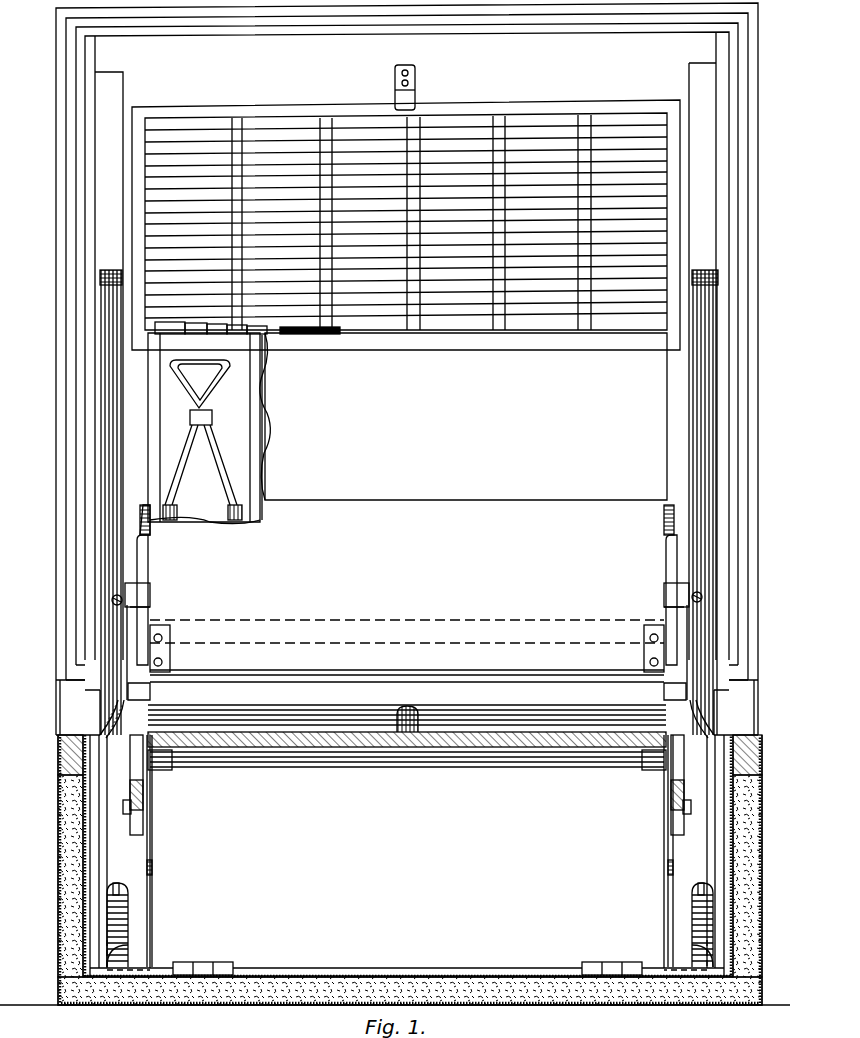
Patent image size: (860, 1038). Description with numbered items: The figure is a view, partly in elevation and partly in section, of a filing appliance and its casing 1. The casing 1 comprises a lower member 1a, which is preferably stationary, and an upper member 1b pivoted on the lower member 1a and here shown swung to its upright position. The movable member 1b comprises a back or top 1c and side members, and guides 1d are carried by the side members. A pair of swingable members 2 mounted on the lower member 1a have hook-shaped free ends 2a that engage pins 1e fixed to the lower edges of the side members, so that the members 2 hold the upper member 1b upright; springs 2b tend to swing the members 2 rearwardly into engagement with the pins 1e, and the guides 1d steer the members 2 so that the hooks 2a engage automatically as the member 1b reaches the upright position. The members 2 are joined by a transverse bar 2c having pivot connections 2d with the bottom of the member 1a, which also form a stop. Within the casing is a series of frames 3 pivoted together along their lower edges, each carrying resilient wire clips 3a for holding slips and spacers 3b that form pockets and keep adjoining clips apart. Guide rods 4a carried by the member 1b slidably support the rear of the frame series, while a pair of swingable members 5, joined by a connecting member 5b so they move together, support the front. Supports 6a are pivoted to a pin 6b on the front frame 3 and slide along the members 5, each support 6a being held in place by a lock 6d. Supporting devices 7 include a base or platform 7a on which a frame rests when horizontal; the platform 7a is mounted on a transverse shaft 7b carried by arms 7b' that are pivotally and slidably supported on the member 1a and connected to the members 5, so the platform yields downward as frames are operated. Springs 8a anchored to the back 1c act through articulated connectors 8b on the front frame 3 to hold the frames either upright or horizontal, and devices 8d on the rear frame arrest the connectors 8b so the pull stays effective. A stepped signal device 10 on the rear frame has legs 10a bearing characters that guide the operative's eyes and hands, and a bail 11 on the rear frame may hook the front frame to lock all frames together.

The casing 1 is at (394, 383).
The lower casing member 1a is at (290, 1015).
The upper casing member 1b is at (388, 346).
The back or top 1c is at (62, 378).
The guides 1d is at (105, 478).
The pin 1e is at (407, 726).
The swingable members 2 is at (106, 882).
The hook-shaped free ends 2a is at (100, 690).
The springs 2b is at (128, 930).
The transverse bar 2c is at (386, 967).
The pivot connection 2d is at (218, 962).
The frames 3 is at (463, 416).
The clips 3a is at (218, 470).
The spacers 3b is at (262, 476).
The guides 4a is at (112, 600).
The swingable members 5 is at (143, 793).
The connecting member 5b is at (368, 634).
The support 6a is at (162, 672).
The pivot pin 6b is at (443, 680).
The lock 6d is at (150, 698).
The supporting devices 7 is at (407, 762).
The base or platform 7a is at (388, 745).
The transverse shaft 7b is at (407, 772).
The arms 7b' is at (410, 851).
The spring 8a is at (150, 538).
The connector 8b is at (143, 585).
The arresting devices 8d is at (130, 608).
The signal and guide device 10 is at (172, 322).
The legs or sections 10a is at (228, 325).
The bail 11 is at (202, 440).